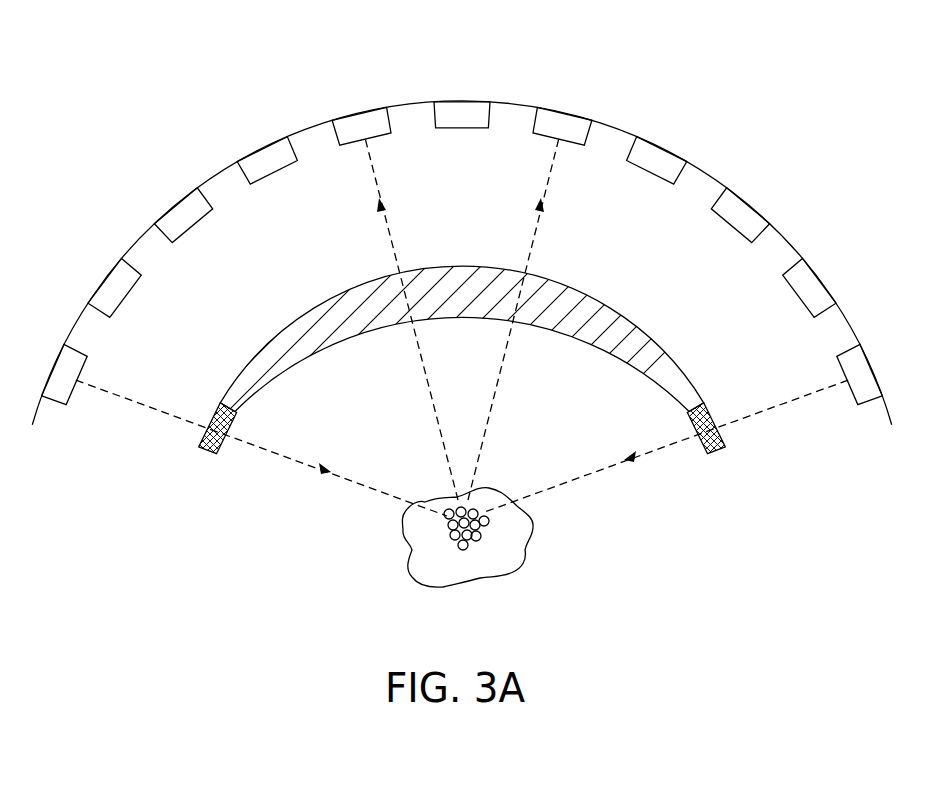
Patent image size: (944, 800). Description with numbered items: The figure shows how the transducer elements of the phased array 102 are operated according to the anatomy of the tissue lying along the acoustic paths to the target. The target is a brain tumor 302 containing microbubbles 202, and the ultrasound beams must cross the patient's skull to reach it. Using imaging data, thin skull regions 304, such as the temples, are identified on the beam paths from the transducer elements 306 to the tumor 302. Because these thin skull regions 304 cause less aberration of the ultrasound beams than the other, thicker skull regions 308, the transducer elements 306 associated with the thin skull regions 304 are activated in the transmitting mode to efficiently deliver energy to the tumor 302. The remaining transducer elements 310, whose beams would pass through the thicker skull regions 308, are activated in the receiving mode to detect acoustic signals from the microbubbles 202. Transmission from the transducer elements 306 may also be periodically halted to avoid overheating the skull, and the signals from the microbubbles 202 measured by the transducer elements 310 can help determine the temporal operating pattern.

The phased array 102 is at (663, 148).
The transducer elements 310 is at (261, 157).
The transducer elements 306 is at (57, 390).
The thicker skull regions 308 is at (441, 268).
The thin skull regions 304 is at (200, 454).
The brain tumor 302 is at (507, 534).
The microbubbles 202 is at (422, 525).